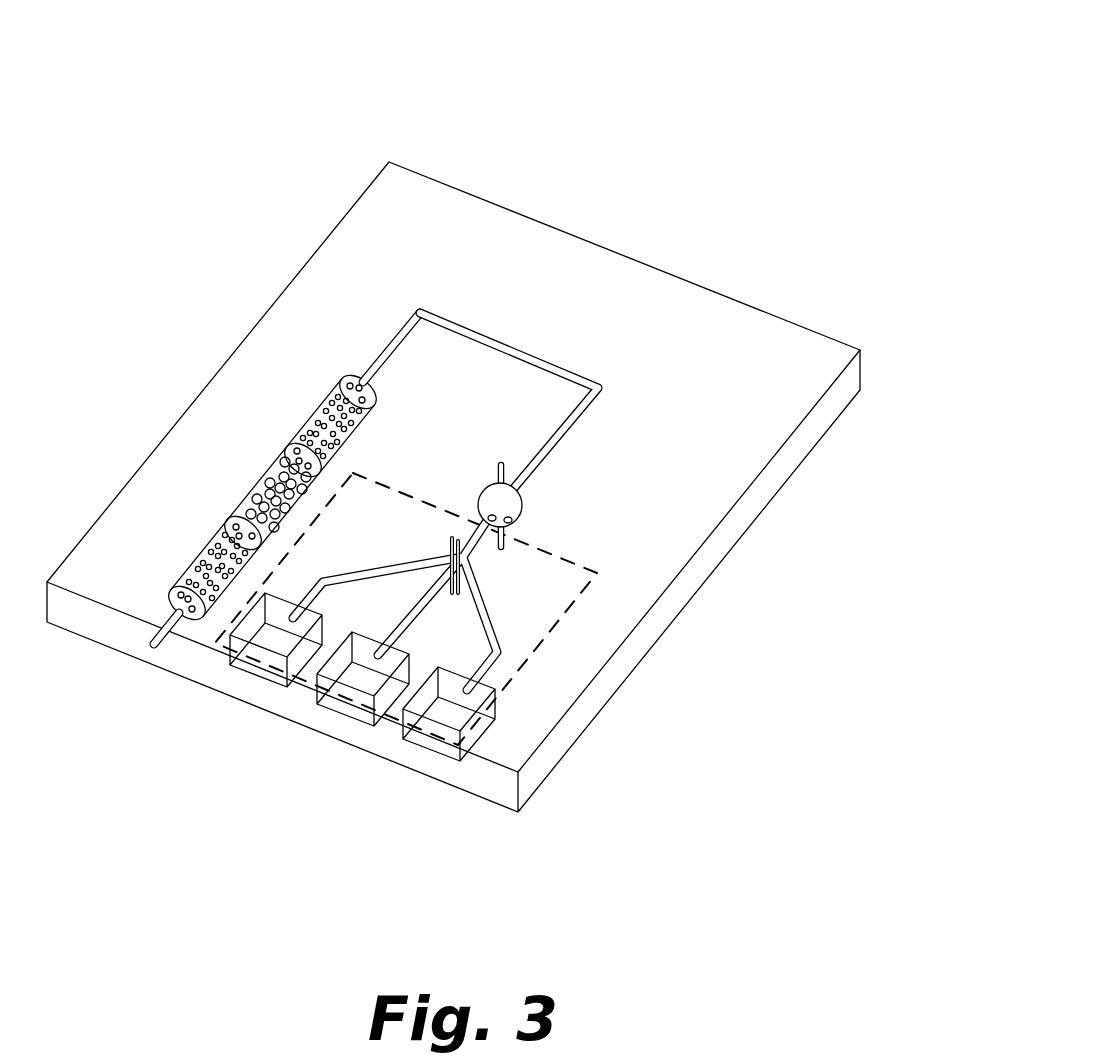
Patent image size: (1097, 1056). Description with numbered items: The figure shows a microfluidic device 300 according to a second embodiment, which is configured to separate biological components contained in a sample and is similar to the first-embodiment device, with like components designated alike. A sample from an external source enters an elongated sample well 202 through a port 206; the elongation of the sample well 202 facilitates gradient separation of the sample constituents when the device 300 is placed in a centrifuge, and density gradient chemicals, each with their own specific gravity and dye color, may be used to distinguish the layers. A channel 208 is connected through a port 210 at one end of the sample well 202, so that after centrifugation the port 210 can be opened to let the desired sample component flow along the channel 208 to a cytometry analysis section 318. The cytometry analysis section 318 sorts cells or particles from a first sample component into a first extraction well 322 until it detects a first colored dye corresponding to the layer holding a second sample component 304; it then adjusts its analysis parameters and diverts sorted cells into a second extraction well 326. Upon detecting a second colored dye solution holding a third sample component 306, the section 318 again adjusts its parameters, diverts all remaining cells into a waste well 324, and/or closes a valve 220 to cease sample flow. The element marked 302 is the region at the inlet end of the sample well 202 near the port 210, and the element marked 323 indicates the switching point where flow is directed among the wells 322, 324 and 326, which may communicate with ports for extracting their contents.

The microfluidic device 300 is at (692, 109).
The sample well 202 is at (203, 472).
The port 206 is at (147, 647).
The channel 208 is at (535, 352).
The port 210 is at (367, 383).
The valve 220 is at (523, 508).
The filter inlet end 302 is at (332, 397).
The second sample component 304 is at (243, 520).
The third sample component 306 is at (210, 545).
The cytometry analysis section 318 is at (597, 575).
The first extraction well 322 is at (478, 713).
The flow direction 323 is at (528, 606).
The waste well 324 is at (255, 677).
The second extraction well 326 is at (343, 713).